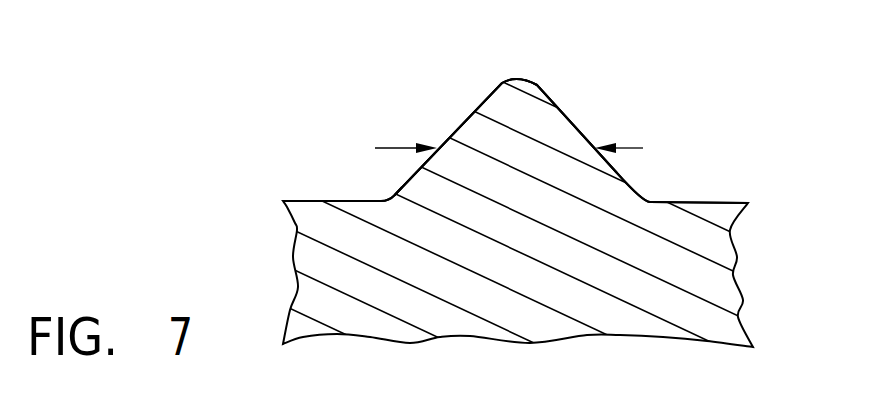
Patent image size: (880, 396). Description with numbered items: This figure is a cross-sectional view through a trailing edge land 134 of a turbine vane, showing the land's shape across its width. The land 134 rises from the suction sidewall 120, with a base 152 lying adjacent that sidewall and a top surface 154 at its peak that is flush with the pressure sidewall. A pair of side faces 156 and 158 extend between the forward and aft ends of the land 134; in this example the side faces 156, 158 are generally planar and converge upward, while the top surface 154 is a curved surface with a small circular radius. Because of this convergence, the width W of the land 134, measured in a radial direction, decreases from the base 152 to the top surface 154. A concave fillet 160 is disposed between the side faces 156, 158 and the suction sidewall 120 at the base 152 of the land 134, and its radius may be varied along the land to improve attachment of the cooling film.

The suction sidewall 120 is at (712, 202).
The land 134 is at (422, 68).
The base 152 is at (685, 162).
The top surface 154 is at (517, 79).
The side face 156 is at (453, 129).
The side face 158 is at (572, 122).
The concave fillet 160 is at (387, 195).
The width W is at (637, 148).